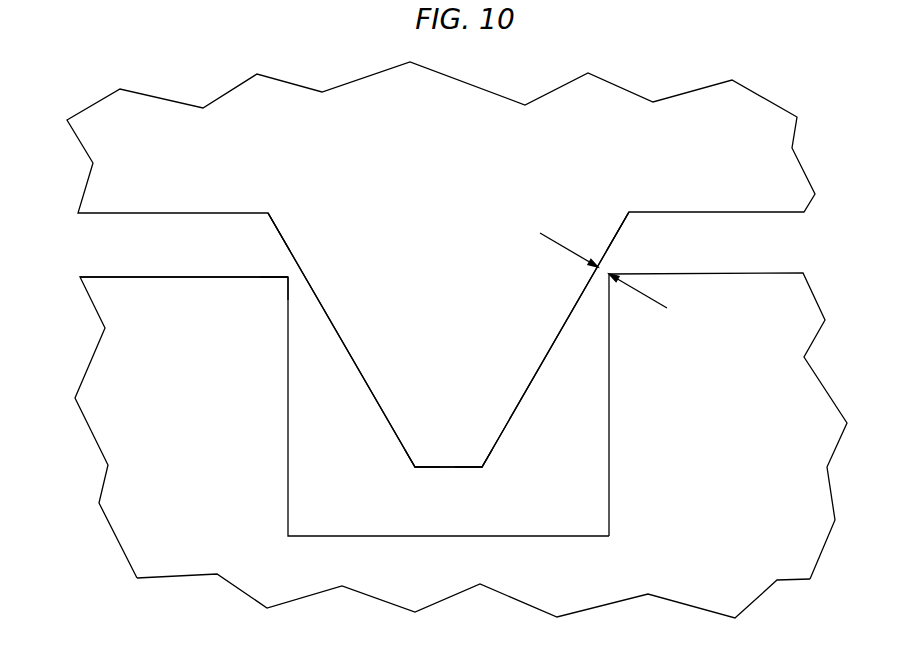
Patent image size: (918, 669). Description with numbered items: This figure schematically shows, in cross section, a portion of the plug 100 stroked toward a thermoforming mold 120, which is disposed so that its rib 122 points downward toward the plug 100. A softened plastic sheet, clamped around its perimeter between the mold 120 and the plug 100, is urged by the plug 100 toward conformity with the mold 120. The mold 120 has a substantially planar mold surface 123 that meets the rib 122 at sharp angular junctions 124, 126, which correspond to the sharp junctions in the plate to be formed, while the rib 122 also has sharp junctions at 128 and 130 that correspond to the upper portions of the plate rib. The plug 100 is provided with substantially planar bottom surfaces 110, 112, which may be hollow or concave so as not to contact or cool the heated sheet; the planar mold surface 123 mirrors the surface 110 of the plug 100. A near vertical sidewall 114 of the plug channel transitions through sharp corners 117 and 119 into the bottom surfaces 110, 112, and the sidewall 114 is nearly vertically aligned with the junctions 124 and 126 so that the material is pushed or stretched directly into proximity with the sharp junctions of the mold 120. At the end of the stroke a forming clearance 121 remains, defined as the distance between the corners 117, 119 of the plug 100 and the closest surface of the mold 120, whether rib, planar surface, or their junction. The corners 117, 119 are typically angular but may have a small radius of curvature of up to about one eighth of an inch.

The plug 100 is at (442, 592).
The substantially planar surface 110 is at (112, 273).
The substantially planar surface 112 is at (728, 272).
The sidewall 114 is at (287, 445).
The corner 117 is at (287, 278).
The corner 119 is at (612, 278).
The mold 120 is at (237, 105).
The forming clearance 121 is at (563, 242).
The rib 122 is at (435, 323).
The substantially planar mold surface 123 is at (205, 277).
The angular junction 124 is at (268, 213).
The angular junction 126 is at (629, 212).
The sharp junction 128 is at (415, 468).
The sharp junction 130 is at (482, 468).